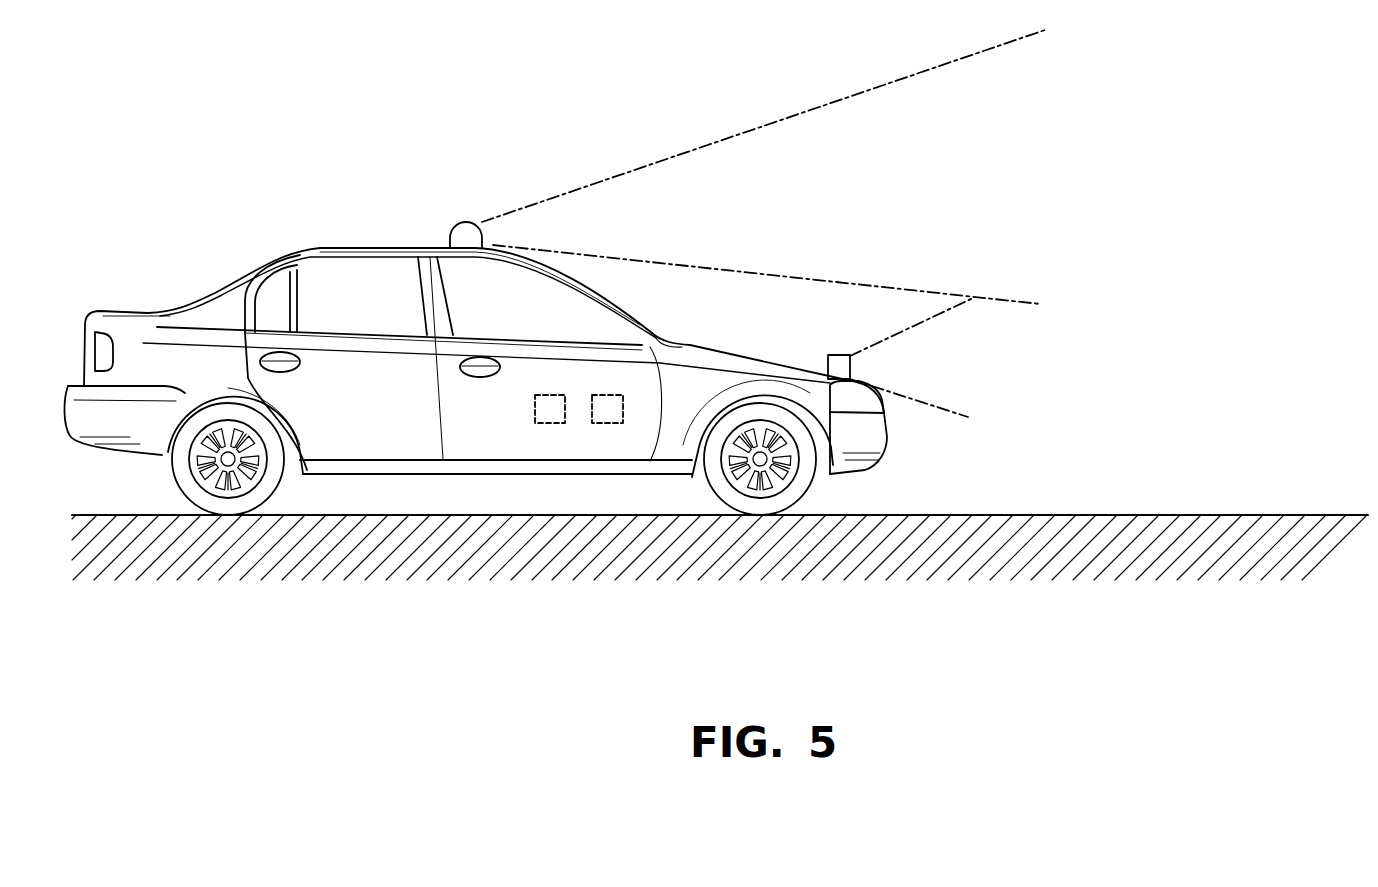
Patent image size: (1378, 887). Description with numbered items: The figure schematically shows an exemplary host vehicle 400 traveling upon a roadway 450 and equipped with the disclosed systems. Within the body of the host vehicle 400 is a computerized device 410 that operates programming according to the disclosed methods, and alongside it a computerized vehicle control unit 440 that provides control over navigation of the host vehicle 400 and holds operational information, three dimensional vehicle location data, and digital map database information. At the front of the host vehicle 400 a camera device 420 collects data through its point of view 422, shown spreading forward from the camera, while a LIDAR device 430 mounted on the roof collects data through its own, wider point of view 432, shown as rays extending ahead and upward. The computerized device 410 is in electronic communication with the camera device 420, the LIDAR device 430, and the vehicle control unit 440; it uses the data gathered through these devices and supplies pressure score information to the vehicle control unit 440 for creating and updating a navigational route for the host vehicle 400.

The host vehicle 400 is at (318, 242).
The computerized device 410 is at (607, 423).
The camera device 420 is at (840, 364).
The point of view 422 is at (912, 378).
The LIDAR device 430 is at (472, 227).
The point of view 432 is at (595, 220).
The computerized vehicle control unit 440 is at (552, 423).
The roadway 450 is at (1205, 515).